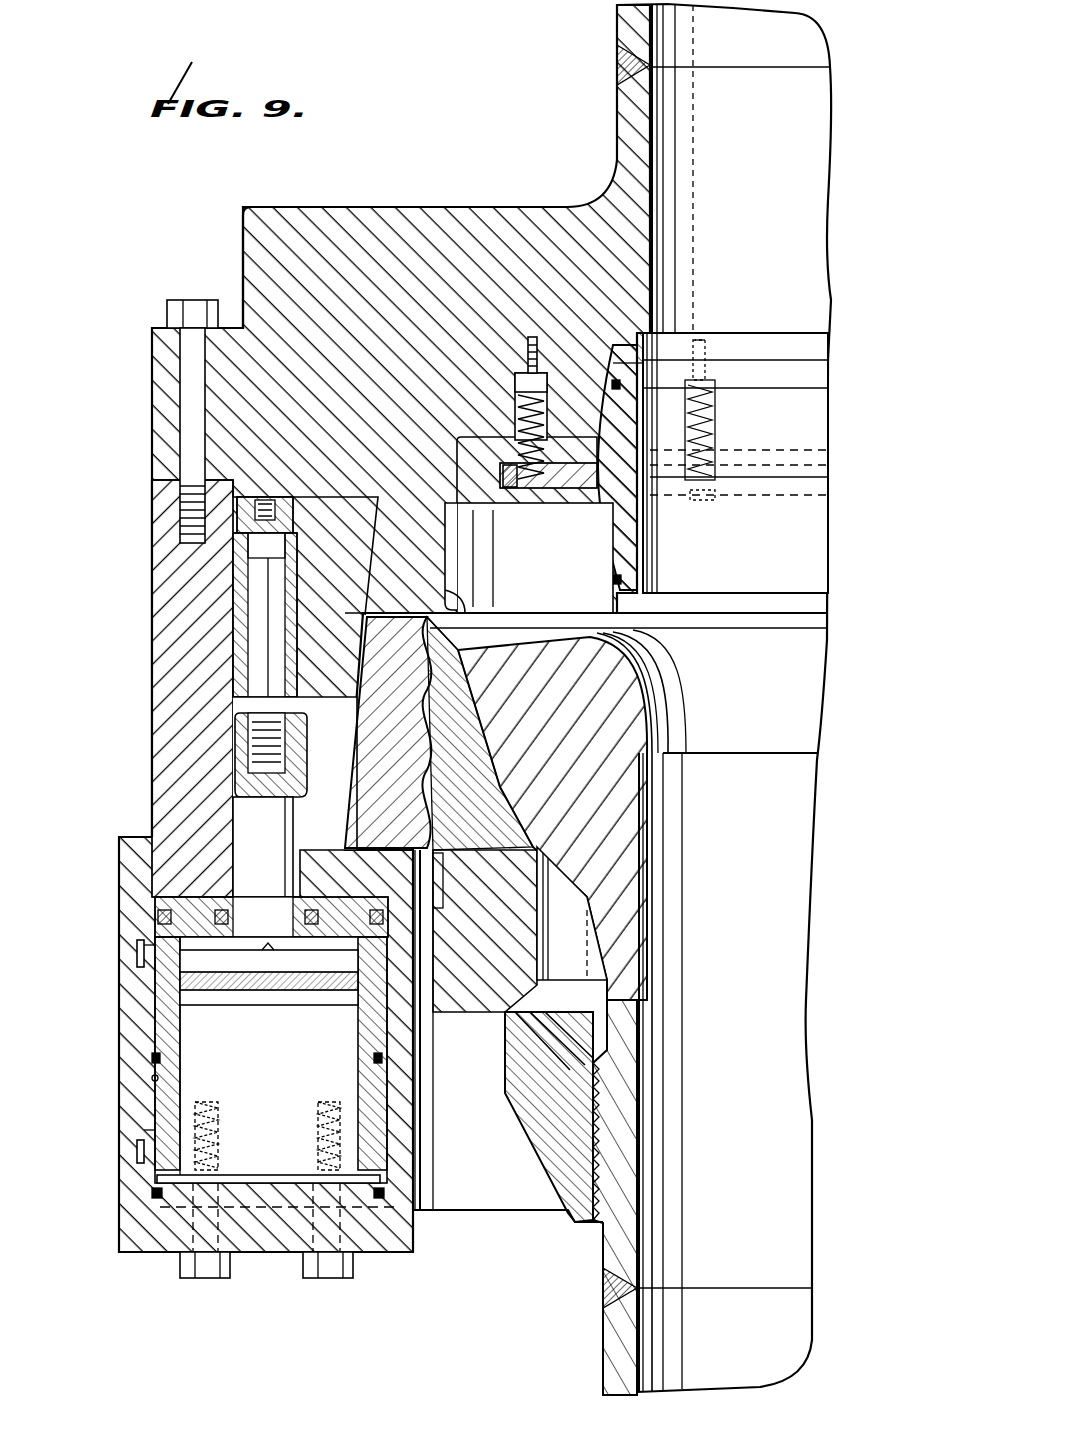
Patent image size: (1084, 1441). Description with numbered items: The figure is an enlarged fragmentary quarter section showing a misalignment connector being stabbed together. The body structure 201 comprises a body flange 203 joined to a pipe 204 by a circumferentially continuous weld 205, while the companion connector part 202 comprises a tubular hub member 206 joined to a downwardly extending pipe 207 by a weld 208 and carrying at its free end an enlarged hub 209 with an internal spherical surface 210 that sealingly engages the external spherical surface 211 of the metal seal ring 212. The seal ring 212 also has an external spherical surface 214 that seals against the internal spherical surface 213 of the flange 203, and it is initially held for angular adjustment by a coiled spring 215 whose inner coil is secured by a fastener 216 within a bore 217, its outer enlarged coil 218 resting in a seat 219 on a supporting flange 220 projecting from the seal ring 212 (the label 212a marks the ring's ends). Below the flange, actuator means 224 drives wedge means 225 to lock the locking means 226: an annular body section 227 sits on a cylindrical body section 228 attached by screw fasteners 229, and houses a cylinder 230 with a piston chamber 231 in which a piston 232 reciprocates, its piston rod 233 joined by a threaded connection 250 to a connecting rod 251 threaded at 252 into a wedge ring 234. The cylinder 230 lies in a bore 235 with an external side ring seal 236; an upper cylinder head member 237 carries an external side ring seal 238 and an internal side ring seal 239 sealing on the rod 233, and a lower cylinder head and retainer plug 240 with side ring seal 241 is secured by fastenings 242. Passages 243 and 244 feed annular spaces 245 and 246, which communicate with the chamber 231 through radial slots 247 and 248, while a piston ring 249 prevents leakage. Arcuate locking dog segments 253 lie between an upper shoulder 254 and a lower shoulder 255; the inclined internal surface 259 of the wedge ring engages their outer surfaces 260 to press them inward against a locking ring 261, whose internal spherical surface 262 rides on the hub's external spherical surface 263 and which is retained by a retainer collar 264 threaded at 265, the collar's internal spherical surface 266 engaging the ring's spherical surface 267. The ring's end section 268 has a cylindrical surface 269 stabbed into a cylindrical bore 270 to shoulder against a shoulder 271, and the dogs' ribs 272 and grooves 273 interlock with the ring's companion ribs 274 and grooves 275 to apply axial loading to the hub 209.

The body structure 201 is at (455, 207).
The connector part 202 is at (603, 1245).
The body flange 203 is at (340, 215).
The pipe 204 is at (622, 20).
The weld 205 is at (618, 65).
The tubular hub member 206 is at (620, 1113).
The pipe 207 is at (608, 1358).
The weld 208 is at (603, 1290).
The enlarged hub 209 is at (640, 755).
The internal spherical surface 210 is at (635, 685).
The external spherical surface 211 is at (630, 590).
The metal seal ring 212 is at (688, 505).
The housing end 212a is at (700, 380).
The internal spherical surface 213 is at (685, 333).
The external spherical surface 214 is at (617, 378).
The coiled spring 215 is at (516, 425).
The fastener 216 is at (528, 350).
The bore 217 is at (516, 385).
The outer enlarged coil 218 is at (508, 490).
The seat 219 is at (520, 478).
The supporting flange 220 is at (490, 470).
The actuator means 224 is at (105, 1182).
The wedge means 225 is at (358, 500).
The locking means 226 is at (332, 800).
The annular body section 227 is at (125, 843).
The cylindrical body section 228 is at (157, 590).
The screw fasteners 229 is at (182, 383).
The cylinder 230 is at (375, 1035).
The piston chamber 231 is at (267, 1118).
The piston 232 is at (215, 993).
The piston rod 233 is at (250, 878).
The wedge ring 234 is at (458, 545).
The bore 235 is at (150, 1078).
The external side ring seal 236 is at (152, 1058).
The upper cylinder head member 237 is at (205, 897).
The external side ring seal 238 is at (158, 915).
The internal side ring seal 239 is at (345, 910).
The lower cylinder head and retainer plug 240 is at (380, 1238).
The side ring seal 241 is at (157, 1197).
The fastenings 242 is at (205, 1268).
The passage 243 is at (138, 955).
The passage 244 is at (138, 1152).
The annular space 245 is at (152, 962).
The annular space 246 is at (148, 1140).
The radial slot 247 is at (230, 955).
The radial slot 248 is at (240, 1180).
The piston ring 249 is at (380, 960).
The threaded connection 250 is at (258, 740).
The connecting rod 251 is at (268, 650).
The threaded connection 252 is at (272, 500).
The locking dog segments 253 is at (372, 713).
The upper shoulder 254 is at (362, 615).
The lower shoulder 255 is at (438, 842).
The internal surface 259 is at (372, 657).
The outer surfaces 260 is at (350, 768).
The locking ring 261 is at (485, 931).
The internal spherical surface 262 is at (520, 800).
The external spherical surface 263 is at (468, 695).
The retainer ring or collar 264 is at (555, 1125).
The threads 265 is at (600, 1182).
The internal spherical surface 266 is at (597, 1050).
The spherical surface 267 is at (468, 990).
The end section 268 is at (382, 727).
The external cylindrical surface 269 is at (445, 630).
The cylindrical bore 270 is at (455, 575).
The shoulder 271 is at (446, 512).
The ribs 272 is at (450, 800).
The grooves 273 is at (462, 740).
The ribs 274 is at (440, 915).
The surface 275 is at (447, 876).